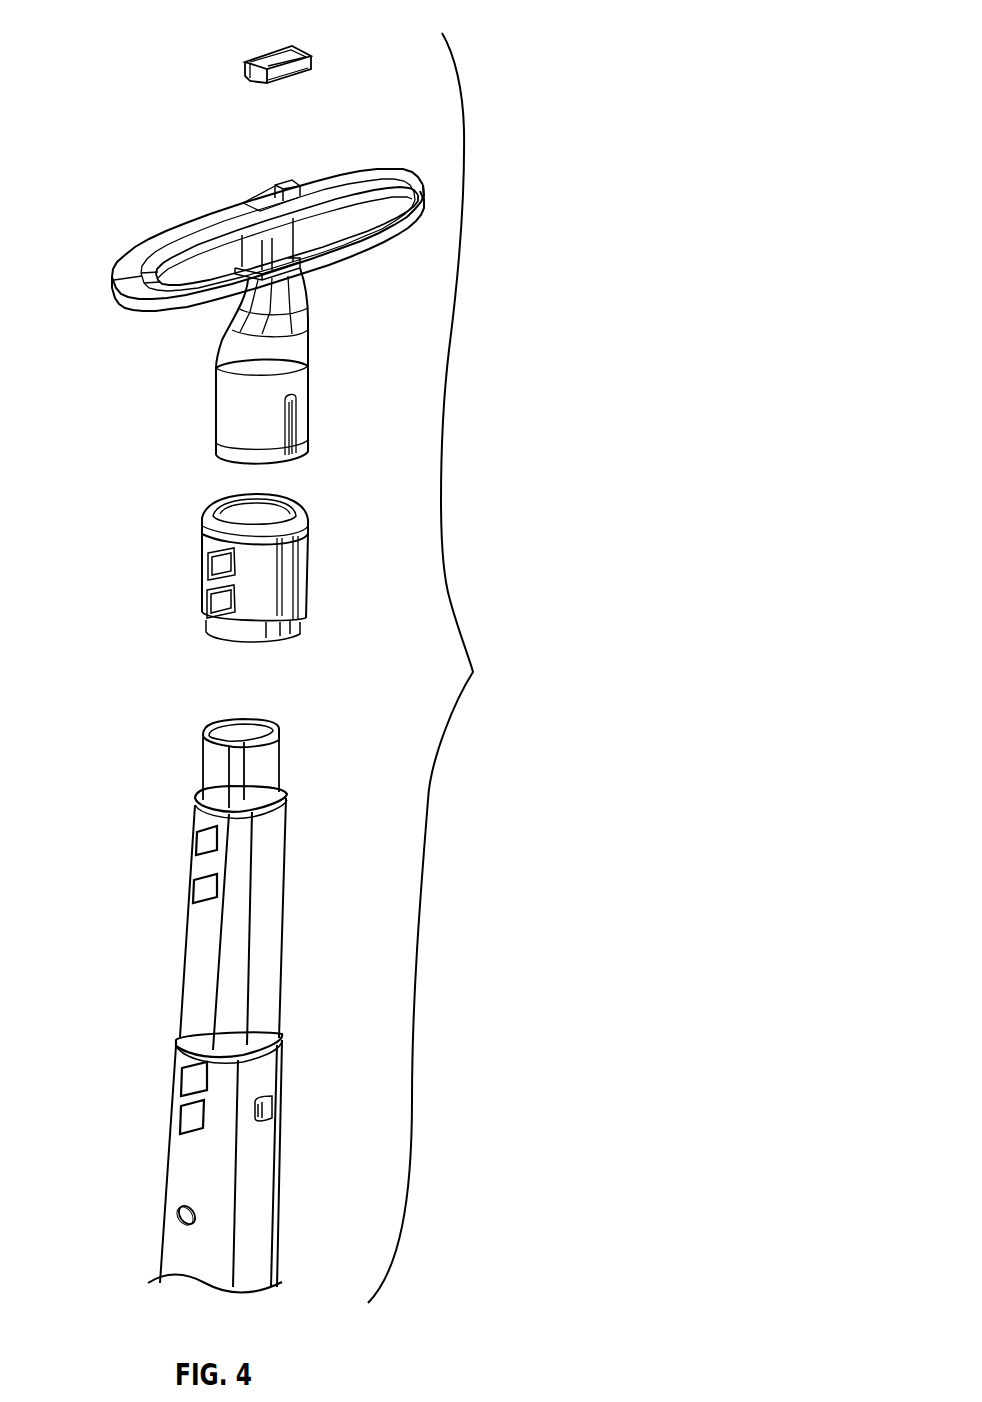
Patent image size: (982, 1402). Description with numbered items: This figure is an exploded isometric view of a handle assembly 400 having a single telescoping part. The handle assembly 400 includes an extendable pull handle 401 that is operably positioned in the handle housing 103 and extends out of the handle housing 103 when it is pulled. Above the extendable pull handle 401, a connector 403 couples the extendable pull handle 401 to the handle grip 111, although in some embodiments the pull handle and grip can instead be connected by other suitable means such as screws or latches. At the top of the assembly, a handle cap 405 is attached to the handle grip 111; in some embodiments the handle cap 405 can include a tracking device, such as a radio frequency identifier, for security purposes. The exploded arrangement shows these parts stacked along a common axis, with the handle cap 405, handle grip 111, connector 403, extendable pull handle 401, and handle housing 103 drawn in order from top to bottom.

The handle assembly 400 is at (555, 47).
The handle cap 405 is at (316, 59).
The handle grip 111 is at (140, 280).
The connector 403 is at (322, 569).
The extendable pull handle 401 is at (206, 927).
The handle housing 103 is at (180, 1237).